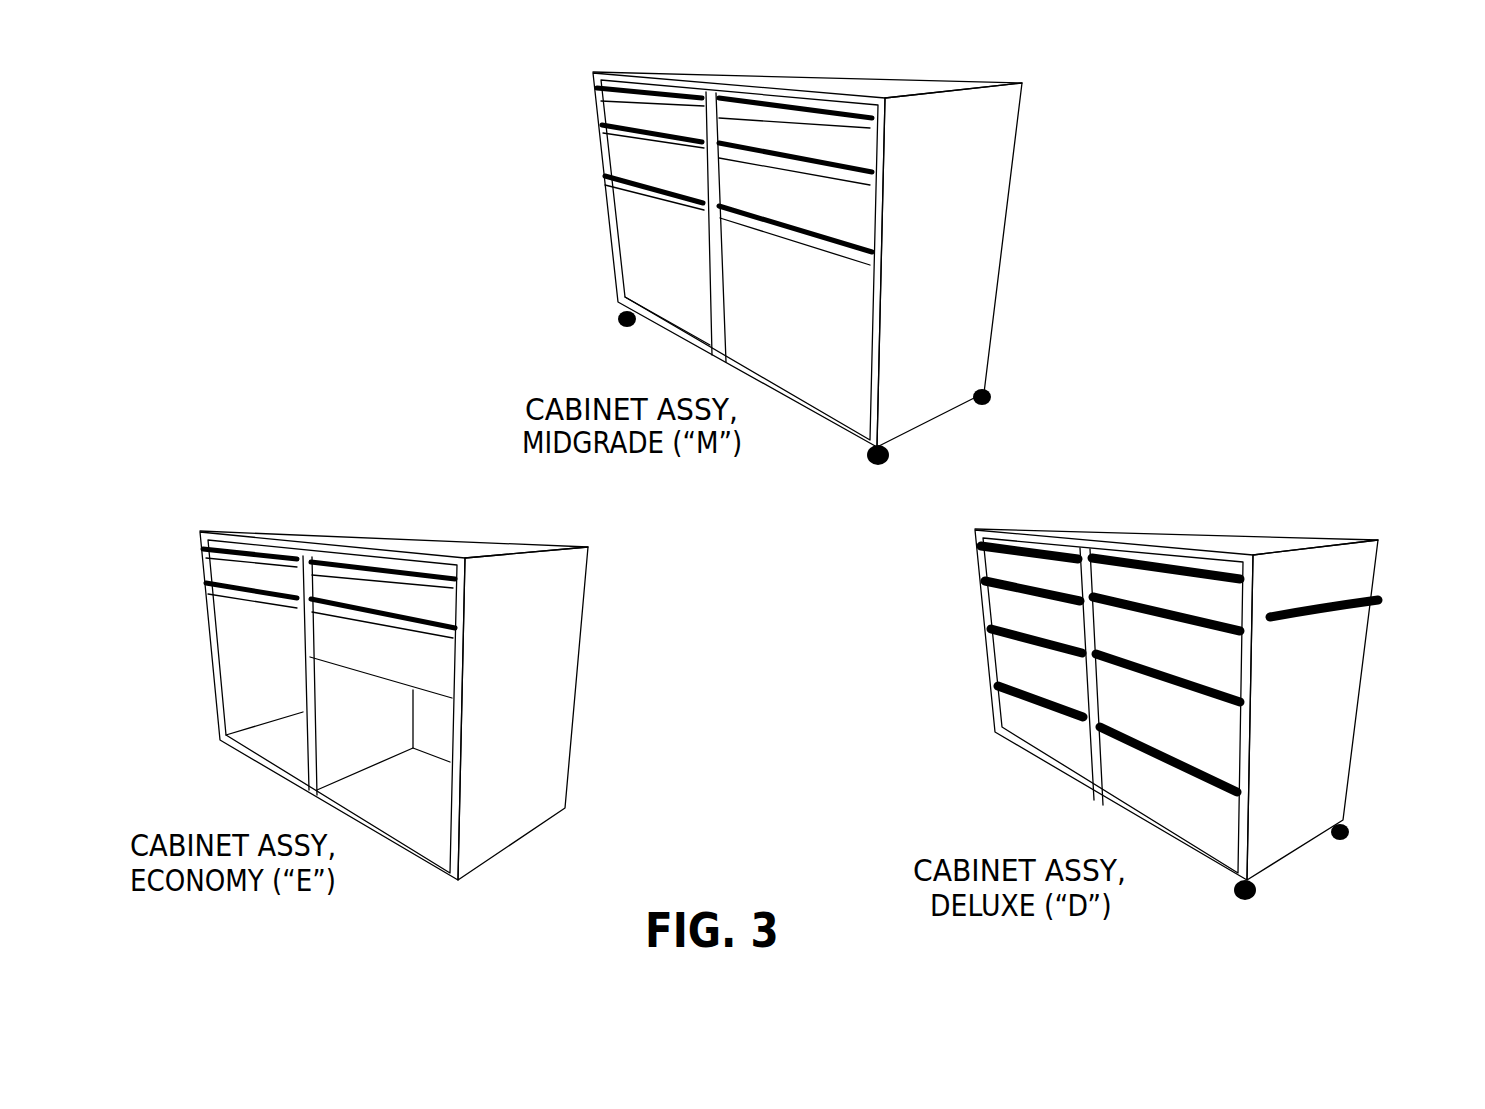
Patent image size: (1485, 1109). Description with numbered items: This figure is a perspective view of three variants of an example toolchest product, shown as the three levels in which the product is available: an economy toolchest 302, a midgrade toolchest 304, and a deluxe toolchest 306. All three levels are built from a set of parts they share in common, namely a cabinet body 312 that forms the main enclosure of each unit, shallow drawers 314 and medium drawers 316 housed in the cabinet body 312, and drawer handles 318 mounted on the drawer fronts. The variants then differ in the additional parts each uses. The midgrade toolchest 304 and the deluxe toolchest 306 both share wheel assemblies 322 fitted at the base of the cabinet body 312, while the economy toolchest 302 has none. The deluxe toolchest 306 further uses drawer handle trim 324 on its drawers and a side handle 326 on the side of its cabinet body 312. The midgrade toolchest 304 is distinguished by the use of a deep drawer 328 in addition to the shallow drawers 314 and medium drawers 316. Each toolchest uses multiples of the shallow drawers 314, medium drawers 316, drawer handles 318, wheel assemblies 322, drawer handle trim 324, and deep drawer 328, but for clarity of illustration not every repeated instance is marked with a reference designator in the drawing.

The economy toolchest 302 is at (225, 478).
The midgrade toolchest 304 is at (430, 102).
The deluxe toolchest 306 is at (1261, 477).
The cabinet body 312 is at (990, 148).
The shallow drawers 314 is at (642, 110).
The medium drawers 316 is at (660, 158).
The drawer handles 318 is at (618, 90).
The wheel assemblies 322 is at (988, 394).
The drawer handle trim 324 is at (1030, 553).
The side handle 326 is at (1328, 613).
The deep drawer 328 is at (653, 253).